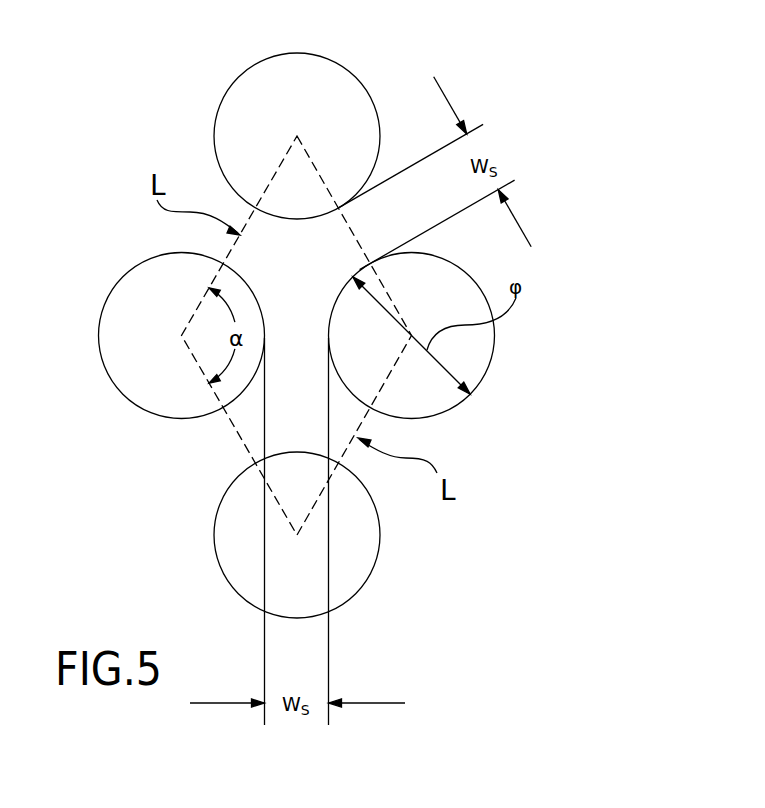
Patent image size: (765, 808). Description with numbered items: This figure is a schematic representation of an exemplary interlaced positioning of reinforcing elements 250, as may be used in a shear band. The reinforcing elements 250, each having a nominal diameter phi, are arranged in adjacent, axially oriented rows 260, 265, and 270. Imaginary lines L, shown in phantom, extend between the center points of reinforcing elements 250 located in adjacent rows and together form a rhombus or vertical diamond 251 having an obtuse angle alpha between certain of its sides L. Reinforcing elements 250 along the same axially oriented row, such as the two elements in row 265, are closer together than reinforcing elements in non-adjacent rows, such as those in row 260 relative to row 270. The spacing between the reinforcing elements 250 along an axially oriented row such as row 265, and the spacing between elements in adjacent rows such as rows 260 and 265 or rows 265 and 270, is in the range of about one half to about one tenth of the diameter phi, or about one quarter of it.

The reinforcing elements 250 is at (438, 325).
The rhombus or vertical diamond 251 is at (236, 438).
The axially oriented row 260 is at (557, 137).
The axially oriented row 265 is at (557, 336).
The axially oriented row 270 is at (557, 535).